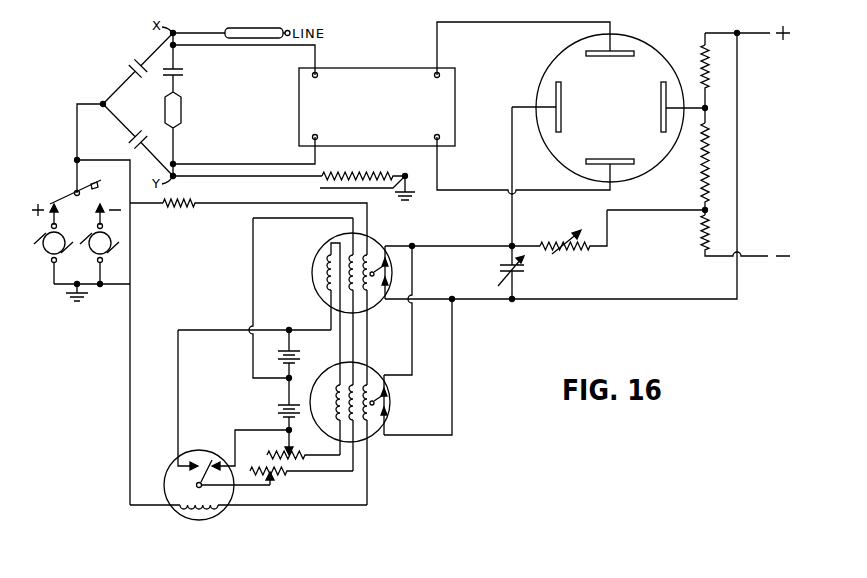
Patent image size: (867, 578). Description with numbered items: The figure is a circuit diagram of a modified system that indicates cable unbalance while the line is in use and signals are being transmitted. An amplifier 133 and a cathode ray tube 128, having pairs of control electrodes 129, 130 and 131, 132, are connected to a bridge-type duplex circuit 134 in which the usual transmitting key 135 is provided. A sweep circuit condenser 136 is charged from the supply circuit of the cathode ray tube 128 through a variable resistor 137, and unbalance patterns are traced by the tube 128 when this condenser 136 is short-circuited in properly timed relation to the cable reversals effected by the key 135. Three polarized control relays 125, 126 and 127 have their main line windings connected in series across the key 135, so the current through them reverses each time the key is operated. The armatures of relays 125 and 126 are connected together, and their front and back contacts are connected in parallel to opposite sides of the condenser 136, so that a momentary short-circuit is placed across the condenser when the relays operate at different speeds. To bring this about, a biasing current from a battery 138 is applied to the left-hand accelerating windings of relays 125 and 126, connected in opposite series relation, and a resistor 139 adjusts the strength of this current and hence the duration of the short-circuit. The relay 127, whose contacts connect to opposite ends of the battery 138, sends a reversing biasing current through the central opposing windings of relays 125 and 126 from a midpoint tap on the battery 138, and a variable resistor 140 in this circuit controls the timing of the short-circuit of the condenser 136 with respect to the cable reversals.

The control relay 125 is at (313, 285).
The control relay 126 is at (391, 415).
The control relay 127 is at (204, 519).
The cathode ray tube 128 is at (601, 105).
The control electrode 129 is at (556, 92).
The control electrode 130 is at (666, 130).
The control electrode 131 is at (625, 50).
The control electrode 132 is at (586, 164).
The amplifier 133 is at (299, 125).
The duplex circuit 134 is at (105, 88).
The transmitting key 135 is at (97, 191).
The sweep circuit condenser 136 is at (524, 271).
The variable resistor 137 is at (572, 251).
The battery 138 is at (287, 382).
The resistor 139 is at (300, 459).
The variable resistor 140 is at (301, 482).